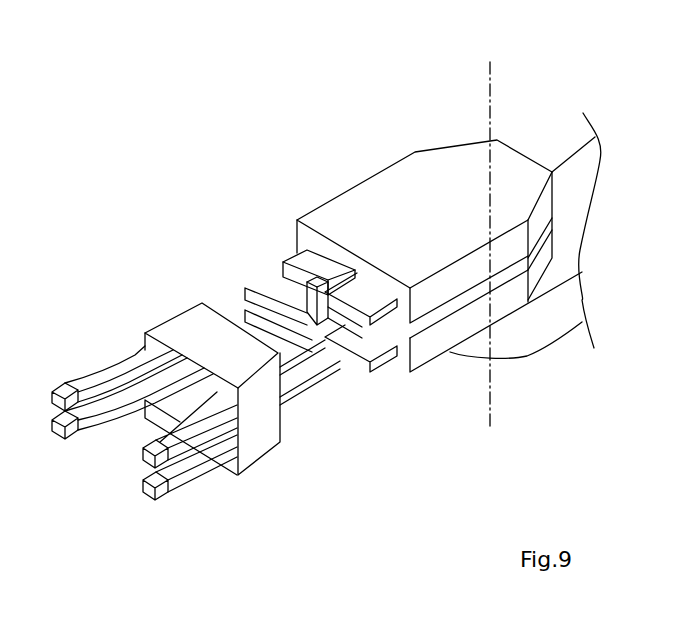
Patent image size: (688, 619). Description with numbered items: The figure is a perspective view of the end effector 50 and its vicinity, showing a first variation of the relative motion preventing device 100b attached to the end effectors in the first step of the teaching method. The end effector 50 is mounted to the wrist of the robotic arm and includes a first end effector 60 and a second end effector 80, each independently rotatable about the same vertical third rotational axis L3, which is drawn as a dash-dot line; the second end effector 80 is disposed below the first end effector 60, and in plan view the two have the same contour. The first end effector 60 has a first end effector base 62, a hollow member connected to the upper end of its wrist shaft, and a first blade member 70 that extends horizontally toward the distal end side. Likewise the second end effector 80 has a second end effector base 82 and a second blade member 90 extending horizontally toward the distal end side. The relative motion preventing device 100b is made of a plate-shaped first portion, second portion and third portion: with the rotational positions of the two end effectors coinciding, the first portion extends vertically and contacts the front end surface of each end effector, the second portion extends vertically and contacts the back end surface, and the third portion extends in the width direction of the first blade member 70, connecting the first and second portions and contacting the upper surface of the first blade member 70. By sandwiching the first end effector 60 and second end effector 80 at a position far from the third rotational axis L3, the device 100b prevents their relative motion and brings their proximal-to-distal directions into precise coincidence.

The end effector 50 is at (54, 37).
The third rotational axis L3 is at (496, 86).
The first end effector base 62 is at (448, 158).
The second end effector base 82 is at (502, 300).
The first blade member 70 is at (252, 325).
The second blade member 90 is at (312, 397).
The relative motion preventing device 100b is at (160, 322).
The first end effector 60 is at (92, 354).
The second end effector 80 is at (188, 497).